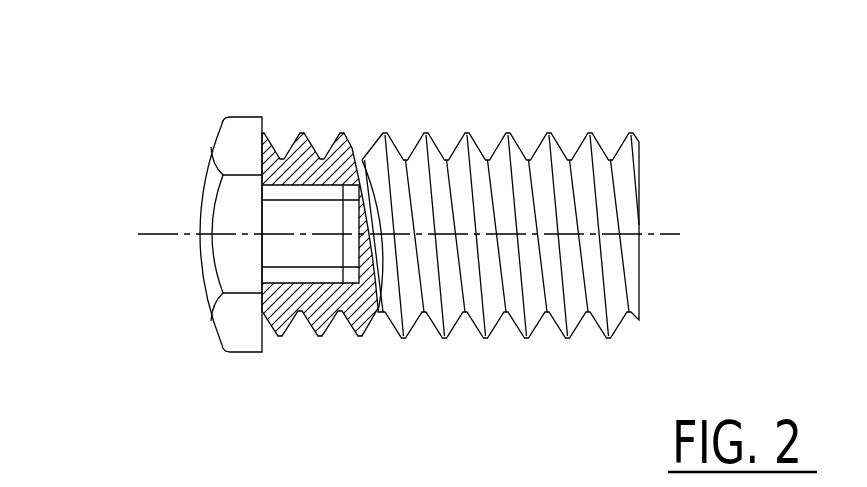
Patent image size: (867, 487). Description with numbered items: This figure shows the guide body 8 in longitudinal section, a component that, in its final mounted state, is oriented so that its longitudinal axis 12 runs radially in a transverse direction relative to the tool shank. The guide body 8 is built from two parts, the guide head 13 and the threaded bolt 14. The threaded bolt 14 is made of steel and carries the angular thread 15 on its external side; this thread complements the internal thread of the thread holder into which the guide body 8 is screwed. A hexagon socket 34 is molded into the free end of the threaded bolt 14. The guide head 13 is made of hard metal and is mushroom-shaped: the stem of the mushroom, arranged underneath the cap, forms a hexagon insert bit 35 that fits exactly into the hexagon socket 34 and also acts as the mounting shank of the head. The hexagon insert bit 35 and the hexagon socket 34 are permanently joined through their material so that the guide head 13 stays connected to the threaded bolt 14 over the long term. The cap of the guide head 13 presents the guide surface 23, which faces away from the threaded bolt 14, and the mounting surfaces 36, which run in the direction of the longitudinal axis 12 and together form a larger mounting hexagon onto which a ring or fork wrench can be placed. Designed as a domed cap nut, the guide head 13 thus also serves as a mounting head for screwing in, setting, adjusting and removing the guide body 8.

The guide body 8 is at (509, 332).
The longitudinal axis of the guide body 12 is at (661, 234).
The guide head 13 is at (157, 234).
The threaded bolt 14 is at (500, 225).
The angular thread 15 is at (468, 124).
The guide surface 23 is at (205, 193).
The hexagon socket 34 is at (352, 197).
The hexagon insert bit 35 is at (300, 282).
The mounting surfaces 36 is at (220, 140).